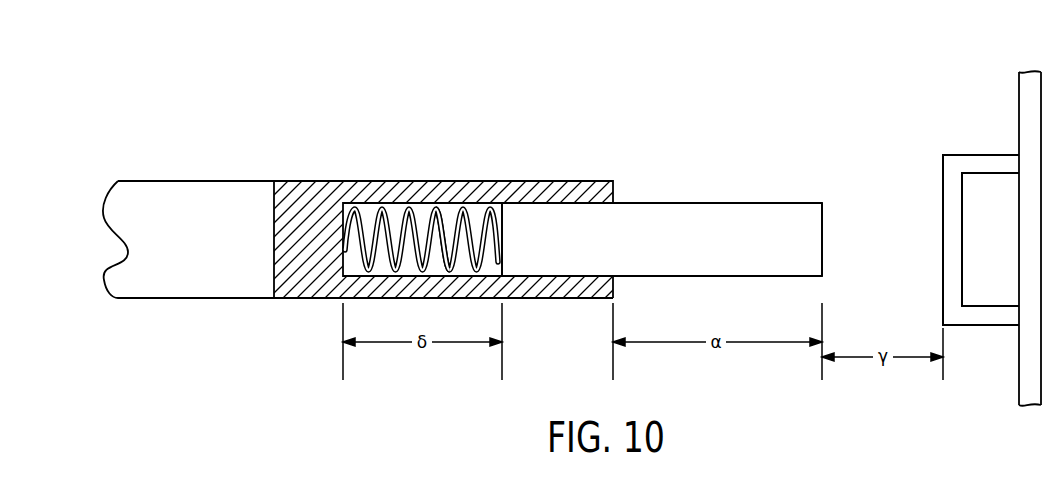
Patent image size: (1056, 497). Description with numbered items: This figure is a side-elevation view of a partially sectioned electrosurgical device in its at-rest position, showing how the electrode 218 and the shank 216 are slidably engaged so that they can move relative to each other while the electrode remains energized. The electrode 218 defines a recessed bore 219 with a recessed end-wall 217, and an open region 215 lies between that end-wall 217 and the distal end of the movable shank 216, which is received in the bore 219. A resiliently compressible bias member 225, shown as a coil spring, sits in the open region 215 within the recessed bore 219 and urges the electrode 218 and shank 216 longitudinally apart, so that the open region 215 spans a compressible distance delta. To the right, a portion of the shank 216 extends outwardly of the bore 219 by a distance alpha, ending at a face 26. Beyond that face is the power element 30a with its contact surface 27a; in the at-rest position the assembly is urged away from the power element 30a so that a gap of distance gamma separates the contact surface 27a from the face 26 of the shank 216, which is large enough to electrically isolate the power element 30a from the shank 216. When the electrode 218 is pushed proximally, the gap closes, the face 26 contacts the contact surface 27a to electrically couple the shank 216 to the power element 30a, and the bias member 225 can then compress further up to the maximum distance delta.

The electrode 218 is at (192, 247).
The open region 215 is at (350, 205).
The recessed bore 219 is at (392, 210).
The bias member 225 is at (440, 207).
The shank 216 is at (637, 247).
The recessed end-wall 217 is at (632, 202).
The face of the shank 26 is at (822, 240).
The contact surface 27a is at (943, 185).
The power element 30a is at (963, 167).